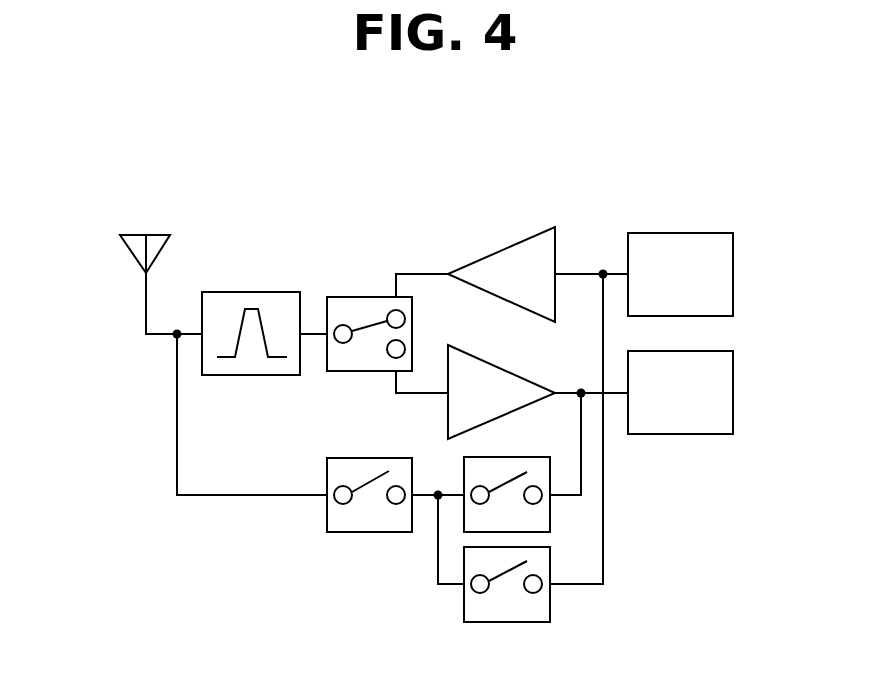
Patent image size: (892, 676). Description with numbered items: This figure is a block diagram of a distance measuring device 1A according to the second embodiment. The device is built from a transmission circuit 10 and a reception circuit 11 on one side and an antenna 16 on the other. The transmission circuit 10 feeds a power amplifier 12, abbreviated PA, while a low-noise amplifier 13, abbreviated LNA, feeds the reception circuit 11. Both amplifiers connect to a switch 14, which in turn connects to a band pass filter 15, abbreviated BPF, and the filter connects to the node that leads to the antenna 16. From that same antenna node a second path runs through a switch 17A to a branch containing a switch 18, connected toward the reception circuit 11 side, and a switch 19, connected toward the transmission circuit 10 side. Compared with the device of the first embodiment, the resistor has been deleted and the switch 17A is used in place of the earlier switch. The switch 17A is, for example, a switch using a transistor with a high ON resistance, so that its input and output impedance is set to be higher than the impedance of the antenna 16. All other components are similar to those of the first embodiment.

The distance measuring device 1A is at (462, 163).
The transmission circuit 10 is at (679, 232).
The reception circuit 11 is at (683, 436).
The power amplifier 12 is at (504, 250).
The low-noise amplifier 13 is at (505, 365).
The switch 14 is at (374, 296).
The band pass filter 15 is at (255, 292).
The antenna 16 is at (162, 233).
The switch 17A is at (373, 457).
The switch 18 is at (552, 512).
The switch 19 is at (552, 602).